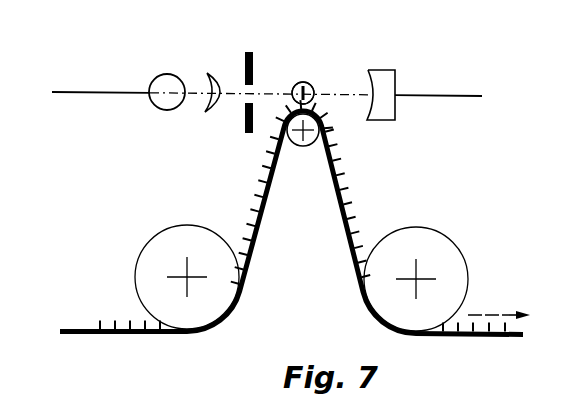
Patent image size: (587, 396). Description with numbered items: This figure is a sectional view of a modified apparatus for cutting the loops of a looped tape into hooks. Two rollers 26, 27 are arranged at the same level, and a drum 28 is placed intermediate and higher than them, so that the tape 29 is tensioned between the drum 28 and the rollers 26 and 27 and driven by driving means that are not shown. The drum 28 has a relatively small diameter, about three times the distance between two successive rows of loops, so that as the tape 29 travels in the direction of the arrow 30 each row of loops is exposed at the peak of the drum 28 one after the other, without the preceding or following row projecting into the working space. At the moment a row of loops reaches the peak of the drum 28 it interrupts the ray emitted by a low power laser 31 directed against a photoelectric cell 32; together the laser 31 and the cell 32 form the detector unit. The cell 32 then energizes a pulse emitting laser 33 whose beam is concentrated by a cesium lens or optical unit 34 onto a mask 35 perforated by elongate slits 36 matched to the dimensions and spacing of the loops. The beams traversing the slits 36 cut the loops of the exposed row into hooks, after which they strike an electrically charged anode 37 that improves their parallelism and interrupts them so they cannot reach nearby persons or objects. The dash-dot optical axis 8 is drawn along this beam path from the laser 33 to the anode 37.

The optical axis 8 is at (351, 93).
The roller 26 is at (153, 252).
The roller 27 is at (437, 252).
The drum 28 is at (302, 133).
The tape 29 is at (340, 178).
The arrow 30 is at (485, 313).
The low power laser 31 is at (297, 88).
The photoelectric cell 32 is at (300, 80).
The pulse emitting laser 33 is at (163, 82).
The optical unit 34 is at (208, 76).
The mask 35 is at (251, 53).
The slits 36 is at (244, 127).
The electrically charged anode 37 is at (387, 83).